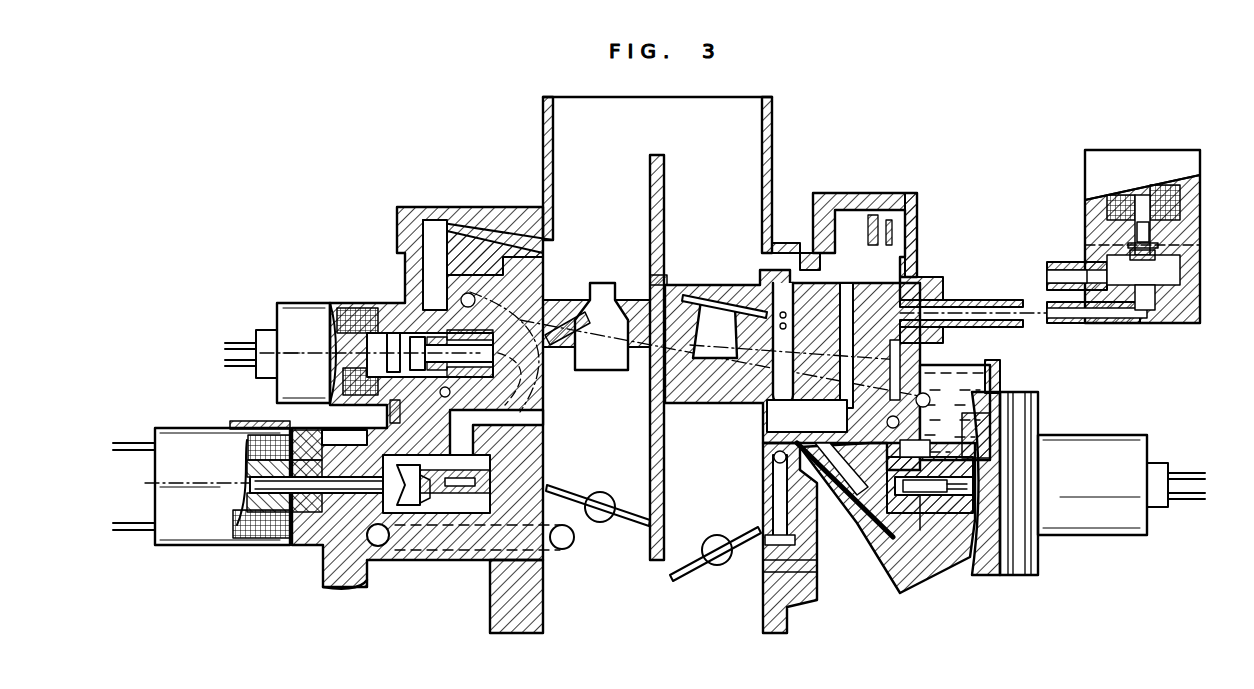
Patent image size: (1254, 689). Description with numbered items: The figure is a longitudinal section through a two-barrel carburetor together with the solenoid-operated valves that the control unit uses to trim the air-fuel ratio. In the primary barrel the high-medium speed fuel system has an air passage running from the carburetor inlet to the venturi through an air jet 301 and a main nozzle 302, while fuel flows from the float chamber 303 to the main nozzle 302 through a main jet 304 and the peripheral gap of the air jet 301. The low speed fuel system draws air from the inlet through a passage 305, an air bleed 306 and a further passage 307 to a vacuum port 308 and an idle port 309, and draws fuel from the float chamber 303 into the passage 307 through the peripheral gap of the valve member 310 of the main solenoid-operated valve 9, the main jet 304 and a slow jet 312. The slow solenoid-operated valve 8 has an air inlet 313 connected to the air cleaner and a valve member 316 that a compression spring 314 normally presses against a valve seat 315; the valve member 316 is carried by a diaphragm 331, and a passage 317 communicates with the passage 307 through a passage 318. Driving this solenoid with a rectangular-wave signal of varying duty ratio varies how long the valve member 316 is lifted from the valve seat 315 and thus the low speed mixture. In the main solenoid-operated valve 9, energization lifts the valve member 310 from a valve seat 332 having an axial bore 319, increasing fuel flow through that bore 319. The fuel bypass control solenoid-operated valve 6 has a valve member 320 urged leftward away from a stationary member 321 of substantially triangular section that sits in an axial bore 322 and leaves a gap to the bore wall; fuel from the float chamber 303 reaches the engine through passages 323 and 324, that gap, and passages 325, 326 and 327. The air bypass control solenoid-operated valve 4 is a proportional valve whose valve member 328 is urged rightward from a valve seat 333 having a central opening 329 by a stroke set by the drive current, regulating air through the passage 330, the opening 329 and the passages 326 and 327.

The air bypass control solenoid-operated valve 4 is at (165, 430).
The fuel bypass control solenoid-operated valve 6 is at (295, 303).
The slow solenoid-operated valve 8 is at (1105, 150).
The main solenoid-operated valve 9 is at (1093, 435).
The air jet 301 is at (768, 270).
The main nozzle 302 is at (708, 290).
The float chamber 303 is at (1000, 365).
The main jet 304 is at (876, 560).
The passage 305 is at (812, 245).
The air bleed 306 is at (917, 220).
The passage 307 is at (920, 352).
The vacuum port 308 is at (752, 548).
The idle port 309 is at (765, 482).
The valve member 310 is at (937, 540).
The slow jet 312 is at (790, 420).
The air inlet 313 is at (1055, 262).
The compression spring 314 is at (1160, 228).
The valve seat 315 is at (1190, 295).
The valve member 316 is at (1160, 257).
The passage 317 is at (1138, 310).
The passage 318 is at (978, 300).
The axial bore 319 is at (850, 495).
The valve member 320 is at (380, 295).
The stationary member 321 is at (548, 372).
The axial bore 322 is at (548, 404).
The passage 323 is at (740, 365).
The passage 324 is at (520, 272).
The passage 325 is at (385, 413).
The passage 326 is at (320, 555).
The passage 327 is at (548, 565).
The valve member 328 is at (455, 520).
The central opening 329 is at (400, 500).
The passage 330 is at (540, 420).
The diaphragm 331 is at (1185, 242).
The valve seat 332 is at (920, 530).
The valve seat 333 is at (430, 500).